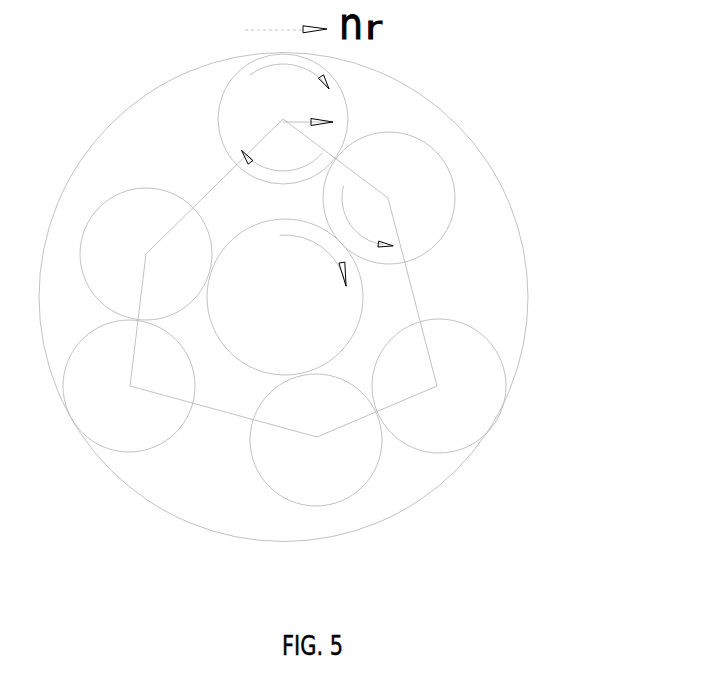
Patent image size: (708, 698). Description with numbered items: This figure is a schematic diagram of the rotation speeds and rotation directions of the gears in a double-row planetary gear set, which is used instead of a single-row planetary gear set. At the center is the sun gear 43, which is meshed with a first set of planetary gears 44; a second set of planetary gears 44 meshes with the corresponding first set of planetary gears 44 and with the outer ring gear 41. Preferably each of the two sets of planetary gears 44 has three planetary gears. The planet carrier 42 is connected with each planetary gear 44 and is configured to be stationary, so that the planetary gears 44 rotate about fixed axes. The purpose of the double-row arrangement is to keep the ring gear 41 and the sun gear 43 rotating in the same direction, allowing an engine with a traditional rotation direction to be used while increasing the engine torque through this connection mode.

The ring gear 41 is at (387, 75).
The planet carrier 42 is at (205, 190).
The sun gear 43 is at (364, 295).
The planetary gears 44 is at (350, 112).